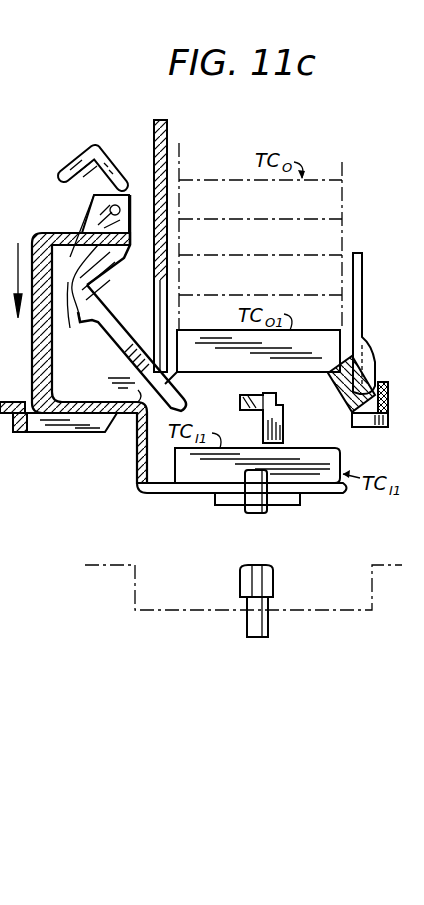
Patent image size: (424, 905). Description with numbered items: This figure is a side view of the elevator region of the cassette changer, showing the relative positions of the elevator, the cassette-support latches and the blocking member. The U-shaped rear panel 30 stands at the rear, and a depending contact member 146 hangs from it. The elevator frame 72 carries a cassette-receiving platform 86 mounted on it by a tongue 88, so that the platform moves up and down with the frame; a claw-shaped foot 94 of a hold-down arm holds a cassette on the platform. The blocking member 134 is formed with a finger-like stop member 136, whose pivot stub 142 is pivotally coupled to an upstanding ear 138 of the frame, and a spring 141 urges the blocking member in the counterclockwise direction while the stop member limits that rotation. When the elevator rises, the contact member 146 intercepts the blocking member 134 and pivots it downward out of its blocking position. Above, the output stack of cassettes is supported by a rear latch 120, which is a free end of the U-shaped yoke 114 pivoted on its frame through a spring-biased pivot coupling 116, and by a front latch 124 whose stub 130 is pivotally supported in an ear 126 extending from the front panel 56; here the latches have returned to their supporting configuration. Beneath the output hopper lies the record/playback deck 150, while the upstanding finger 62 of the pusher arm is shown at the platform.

The U-shaped rear panel 30 is at (170, 123).
The front panel 56 is at (364, 318).
The upstanding finger 62 is at (270, 508).
The frame 72 is at (50, 233).
The cassette-receiving platform 86 is at (178, 494).
The tongue 88 is at (53, 386).
The claw-shaped foot 94 is at (286, 428).
The U-shaped yoke 114 is at (22, 432).
The pivot coupling 116 is at (135, 370).
The rear latch 120 is at (178, 376).
The front latch 124 is at (337, 390).
The ear 126 is at (390, 424).
The stub 130 is at (381, 388).
The blocking member 134 is at (112, 337).
The stop member 136 is at (105, 146).
The upstanding ear 138 is at (133, 245).
The spring 141 is at (80, 317).
The pivot stub 142 is at (96, 210).
The depending contact member 146 is at (168, 356).
The record/playback deck 150 is at (275, 585).